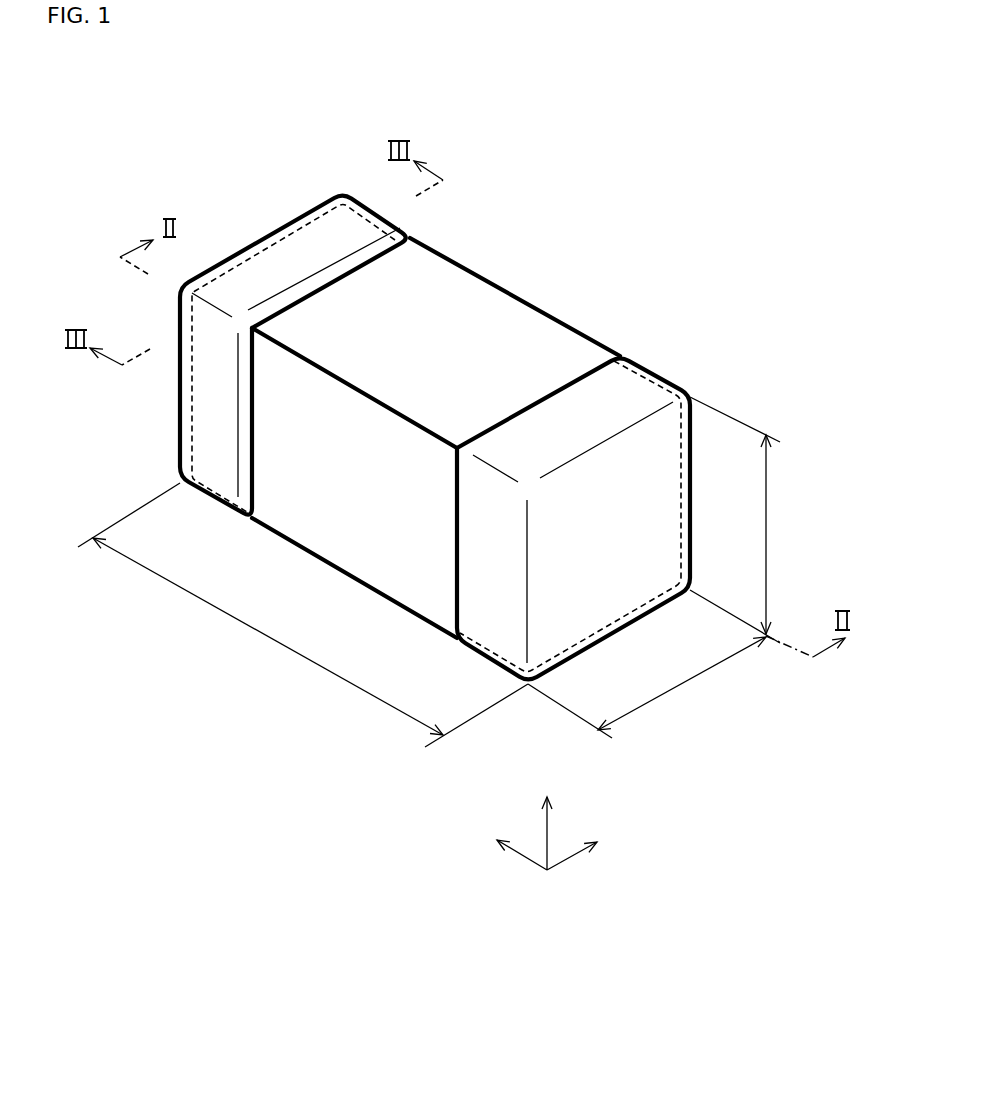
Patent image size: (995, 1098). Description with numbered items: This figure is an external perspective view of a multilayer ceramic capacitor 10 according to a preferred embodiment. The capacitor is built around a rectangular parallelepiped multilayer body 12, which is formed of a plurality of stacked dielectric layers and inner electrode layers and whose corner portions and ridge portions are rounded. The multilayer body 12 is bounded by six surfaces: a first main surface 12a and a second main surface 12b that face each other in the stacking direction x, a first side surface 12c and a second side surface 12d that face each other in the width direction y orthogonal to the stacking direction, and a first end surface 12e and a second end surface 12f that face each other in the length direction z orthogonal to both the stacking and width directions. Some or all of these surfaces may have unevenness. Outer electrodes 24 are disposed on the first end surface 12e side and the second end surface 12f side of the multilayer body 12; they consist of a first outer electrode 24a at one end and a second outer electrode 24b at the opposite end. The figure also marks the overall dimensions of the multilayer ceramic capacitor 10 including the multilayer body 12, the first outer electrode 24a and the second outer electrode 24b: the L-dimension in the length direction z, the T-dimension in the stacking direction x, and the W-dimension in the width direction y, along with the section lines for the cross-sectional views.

The multilayer ceramic capacitor 10 is at (123, 168).
The multilayer body 12 is at (556, 328).
The first main surface 12a is at (508, 327).
The second main surface 12b is at (328, 540).
The first side surface 12c is at (388, 567).
The second side surface 12d is at (465, 303).
The first end surface 12e is at (282, 256).
The second end surface 12f is at (650, 487).
The outer electrodes 24 is at (289, 799).
The first outer electrode 24a is at (360, 199).
The second outer electrode 24b is at (656, 368).